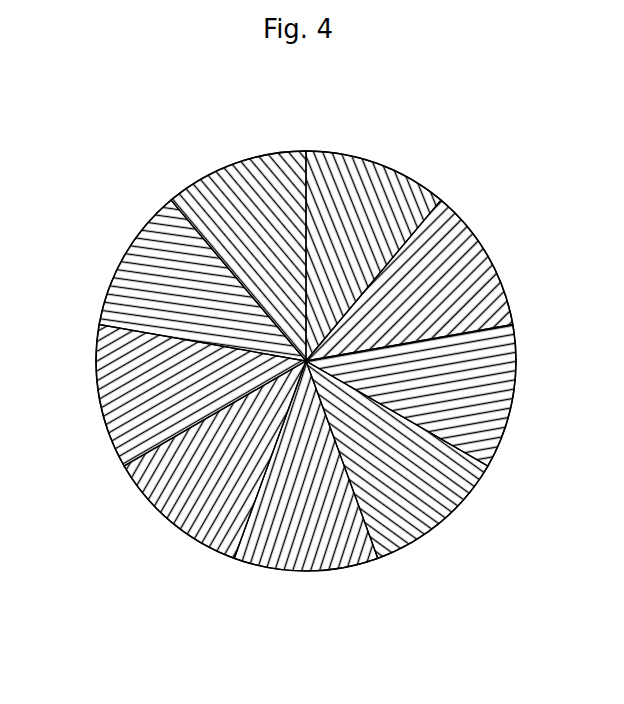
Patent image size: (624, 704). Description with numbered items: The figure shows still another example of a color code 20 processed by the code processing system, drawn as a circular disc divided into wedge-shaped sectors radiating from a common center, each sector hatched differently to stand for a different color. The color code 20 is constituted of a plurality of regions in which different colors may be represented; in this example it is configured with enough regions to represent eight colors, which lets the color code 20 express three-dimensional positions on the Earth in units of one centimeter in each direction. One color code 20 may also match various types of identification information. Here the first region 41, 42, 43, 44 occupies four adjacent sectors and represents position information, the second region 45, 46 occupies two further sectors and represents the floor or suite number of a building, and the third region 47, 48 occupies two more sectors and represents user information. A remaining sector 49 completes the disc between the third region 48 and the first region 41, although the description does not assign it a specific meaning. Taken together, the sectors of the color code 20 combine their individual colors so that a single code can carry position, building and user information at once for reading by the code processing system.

The color code 20 is at (152, 156).
The first region 41 is at (246, 168).
The first region 42 is at (386, 170).
The first region 43 is at (490, 270).
The first region 44 is at (497, 410).
The second region 45 is at (433, 532).
The second region 46 is at (295, 560).
The third region 47 is at (163, 517).
The third region 48 is at (108, 383).
The ninth segment 49 is at (135, 250).